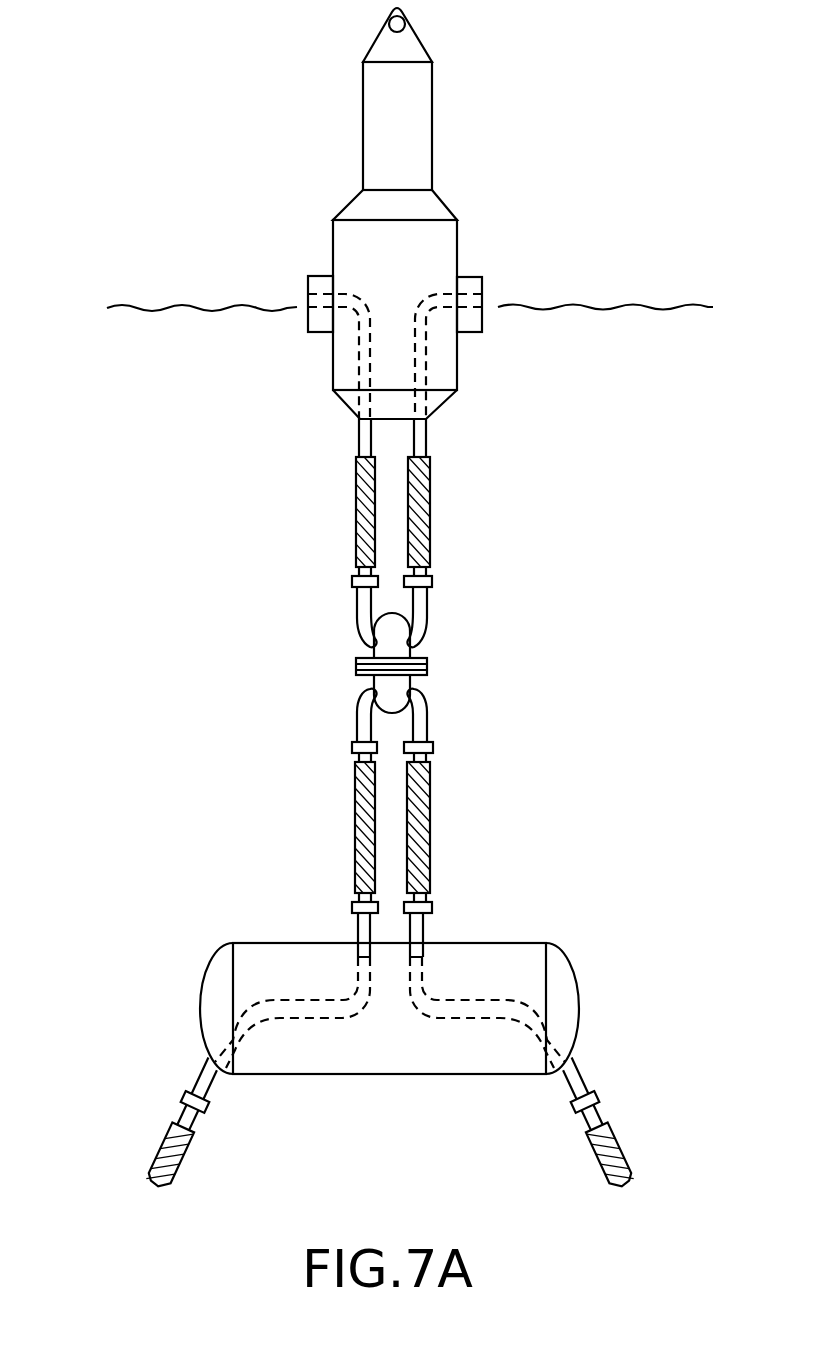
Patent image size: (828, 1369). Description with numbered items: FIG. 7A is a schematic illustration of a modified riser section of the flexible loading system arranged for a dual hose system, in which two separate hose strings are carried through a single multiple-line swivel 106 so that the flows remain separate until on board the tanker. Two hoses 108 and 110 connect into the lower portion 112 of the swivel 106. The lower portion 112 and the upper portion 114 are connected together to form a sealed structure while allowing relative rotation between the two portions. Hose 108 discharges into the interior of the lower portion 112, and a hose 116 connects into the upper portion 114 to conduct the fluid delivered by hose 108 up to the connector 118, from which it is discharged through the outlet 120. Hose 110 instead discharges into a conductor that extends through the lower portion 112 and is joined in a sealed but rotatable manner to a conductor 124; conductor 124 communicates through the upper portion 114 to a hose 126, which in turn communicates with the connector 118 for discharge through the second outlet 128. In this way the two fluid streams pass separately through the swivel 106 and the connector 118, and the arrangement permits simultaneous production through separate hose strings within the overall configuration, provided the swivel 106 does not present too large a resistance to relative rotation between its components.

The swivel 106 is at (410, 681).
The hose 108 is at (355, 818).
The hose 110 is at (430, 822).
The lower portion 112 is at (375, 682).
The upper portion 114 is at (411, 652).
The hose 116 is at (425, 603).
The connector 118 is at (453, 393).
The outlet 120 is at (483, 300).
The conductor 124 is at (357, 605).
The hose 126 is at (355, 502).
The outlet 128 is at (308, 299).